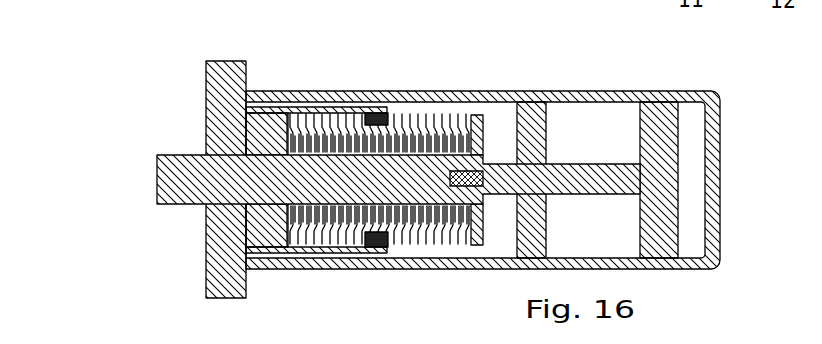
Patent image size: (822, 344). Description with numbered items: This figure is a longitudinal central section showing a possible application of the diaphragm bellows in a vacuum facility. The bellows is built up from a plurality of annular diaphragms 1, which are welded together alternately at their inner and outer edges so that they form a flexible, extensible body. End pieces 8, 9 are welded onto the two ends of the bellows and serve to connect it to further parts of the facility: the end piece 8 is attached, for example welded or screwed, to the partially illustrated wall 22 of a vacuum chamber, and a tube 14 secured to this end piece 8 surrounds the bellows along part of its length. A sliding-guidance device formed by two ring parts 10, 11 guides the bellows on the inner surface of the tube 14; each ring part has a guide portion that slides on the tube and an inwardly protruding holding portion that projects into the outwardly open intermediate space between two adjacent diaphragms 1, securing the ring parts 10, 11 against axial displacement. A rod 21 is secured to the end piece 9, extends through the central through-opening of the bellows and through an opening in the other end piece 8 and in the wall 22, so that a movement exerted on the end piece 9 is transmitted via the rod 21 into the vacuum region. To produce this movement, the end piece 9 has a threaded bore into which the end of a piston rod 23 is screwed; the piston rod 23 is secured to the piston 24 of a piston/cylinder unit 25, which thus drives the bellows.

The diaphragm 1 is at (437, 233).
The end piece 8 is at (267, 136).
The end piece 9 is at (482, 148).
The ring part 10 is at (378, 248).
The ring part 11 is at (378, 113).
The tube 14 is at (305, 250).
The rod 21 is at (174, 192).
The wall 22 is at (219, 81).
The piston rod 23 is at (567, 175).
The piston 24 is at (667, 150).
The piston/cylinder unit 25 is at (702, 84).